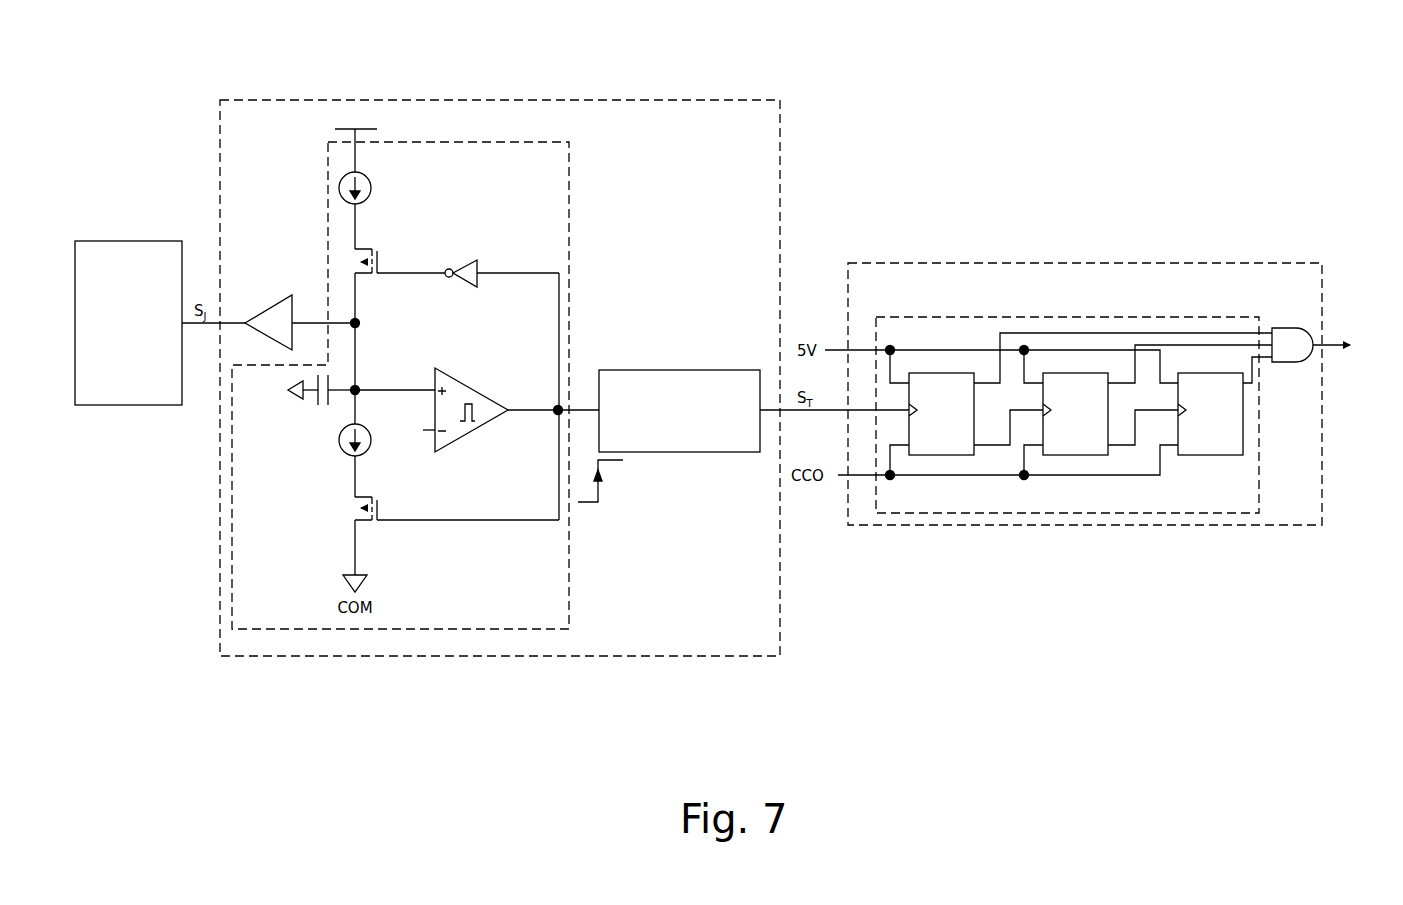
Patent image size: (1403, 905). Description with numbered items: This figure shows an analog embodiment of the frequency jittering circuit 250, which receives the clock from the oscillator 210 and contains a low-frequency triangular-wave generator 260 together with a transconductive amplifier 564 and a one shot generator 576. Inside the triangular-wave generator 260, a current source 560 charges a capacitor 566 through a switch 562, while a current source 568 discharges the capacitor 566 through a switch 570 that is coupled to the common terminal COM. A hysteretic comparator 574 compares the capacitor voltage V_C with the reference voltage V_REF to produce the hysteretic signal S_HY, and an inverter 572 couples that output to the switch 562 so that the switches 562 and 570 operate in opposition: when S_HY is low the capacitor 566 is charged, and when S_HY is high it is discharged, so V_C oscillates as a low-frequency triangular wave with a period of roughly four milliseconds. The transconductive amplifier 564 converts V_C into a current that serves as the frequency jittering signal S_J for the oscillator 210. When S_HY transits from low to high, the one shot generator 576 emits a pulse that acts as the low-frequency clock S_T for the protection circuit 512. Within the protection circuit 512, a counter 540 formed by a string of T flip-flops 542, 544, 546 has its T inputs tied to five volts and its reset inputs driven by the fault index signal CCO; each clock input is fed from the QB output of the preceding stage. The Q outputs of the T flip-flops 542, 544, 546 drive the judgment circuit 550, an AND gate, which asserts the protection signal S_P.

The oscillator 210 is at (128, 241).
The frequency jittering circuit 250 is at (510, 100).
The low-frequency triangular-wave generator 260 is at (569, 232).
The protection circuit 512 is at (1100, 263).
The counter 540 is at (1063, 317).
The T flip-flop 542 is at (940, 455).
The T flip-flop 544 is at (1072, 455).
The T flip-flop 546 is at (1208, 455).
The judgment circuit 550 is at (1280, 328).
The current source 560 is at (371, 185).
The switch 562 is at (381, 243).
The transconductive amplifier 564 is at (268, 305).
The capacitor 566 is at (310, 408).
The current source 568 is at (338, 443).
The switch 570 is at (348, 515).
The inverter 572 is at (463, 265).
The hysteretic comparator 574 is at (470, 382).
The one shot generator 576 is at (678, 370).